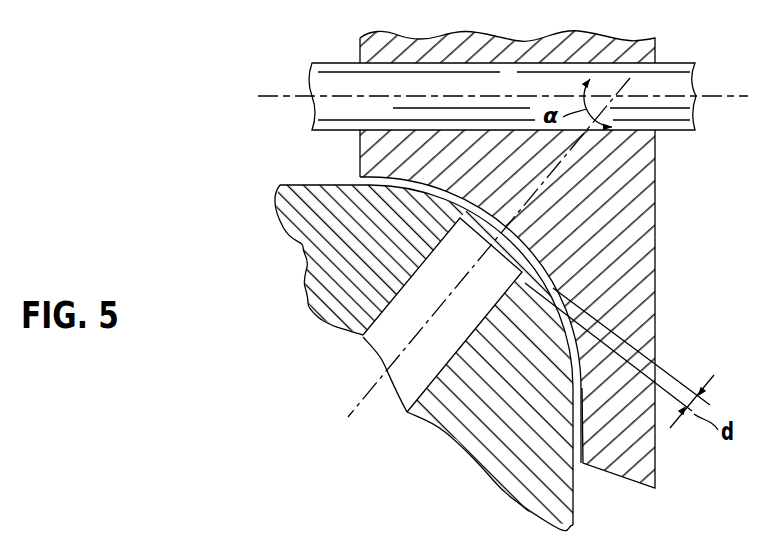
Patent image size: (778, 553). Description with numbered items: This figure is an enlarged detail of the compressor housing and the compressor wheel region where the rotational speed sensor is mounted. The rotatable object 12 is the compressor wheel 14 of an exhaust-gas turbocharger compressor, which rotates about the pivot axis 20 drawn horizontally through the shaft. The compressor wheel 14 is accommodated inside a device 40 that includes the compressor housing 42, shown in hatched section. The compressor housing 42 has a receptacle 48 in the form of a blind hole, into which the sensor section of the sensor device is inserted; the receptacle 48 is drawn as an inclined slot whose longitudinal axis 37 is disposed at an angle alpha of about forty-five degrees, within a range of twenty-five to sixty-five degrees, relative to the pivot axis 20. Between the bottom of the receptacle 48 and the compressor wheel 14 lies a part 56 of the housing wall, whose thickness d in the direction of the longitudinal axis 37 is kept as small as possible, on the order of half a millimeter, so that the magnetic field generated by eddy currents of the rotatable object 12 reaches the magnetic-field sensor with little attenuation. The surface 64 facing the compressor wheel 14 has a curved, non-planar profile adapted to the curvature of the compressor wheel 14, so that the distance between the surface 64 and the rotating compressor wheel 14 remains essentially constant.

The rotatable object 12 is at (673, 160).
The compressor wheel 14 is at (633, 298).
The pivot axis 20 is at (681, 83).
The longitudinal axis 37 is at (360, 413).
The device 40 is at (340, 262).
The compressor housing 42 is at (471, 368).
The receptacle 48 is at (398, 330).
The part of the wall 56 is at (520, 240).
The surface 64 is at (492, 220).